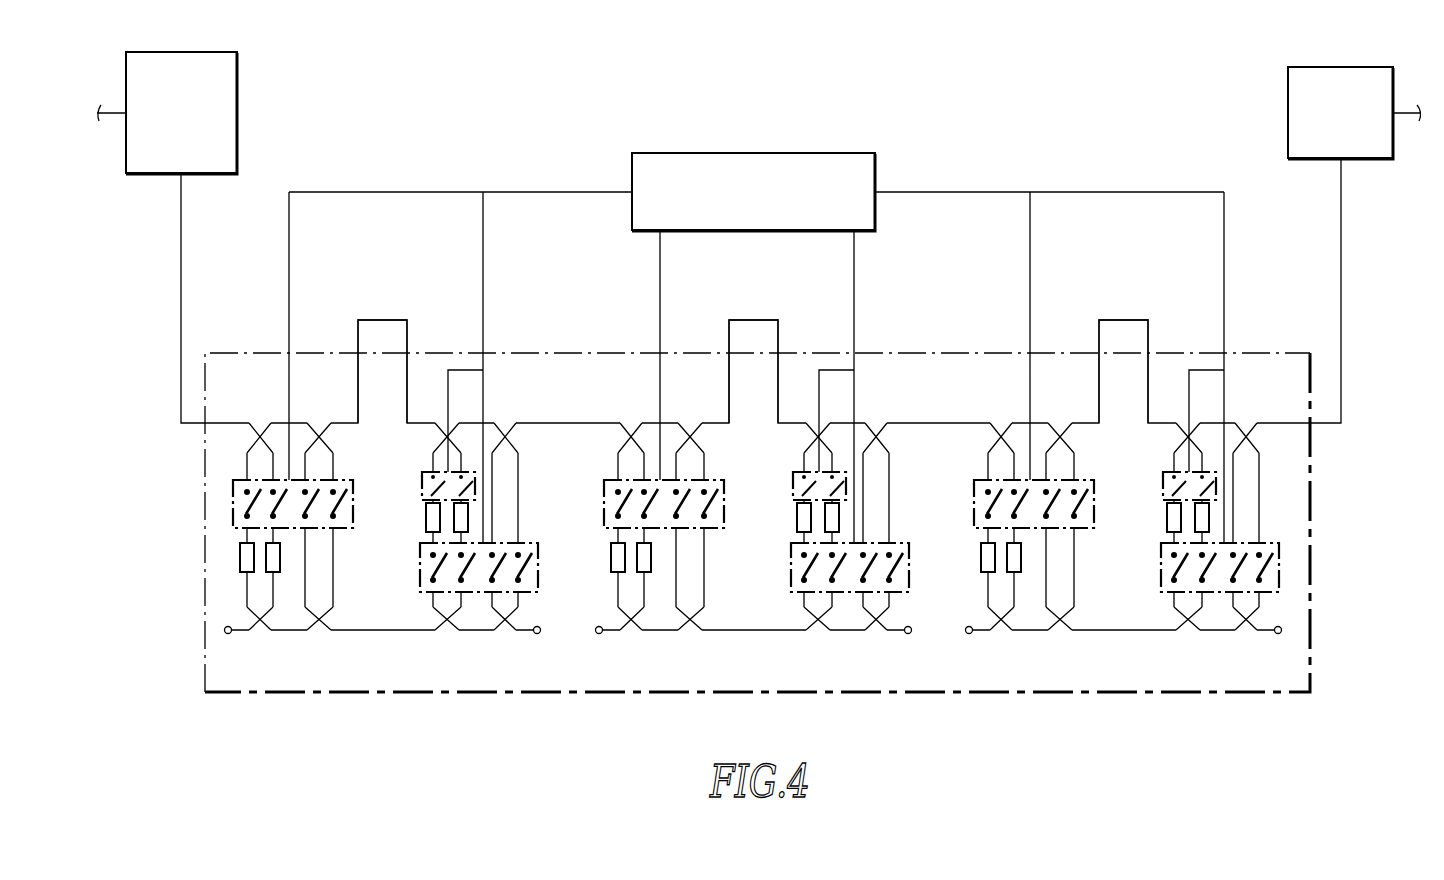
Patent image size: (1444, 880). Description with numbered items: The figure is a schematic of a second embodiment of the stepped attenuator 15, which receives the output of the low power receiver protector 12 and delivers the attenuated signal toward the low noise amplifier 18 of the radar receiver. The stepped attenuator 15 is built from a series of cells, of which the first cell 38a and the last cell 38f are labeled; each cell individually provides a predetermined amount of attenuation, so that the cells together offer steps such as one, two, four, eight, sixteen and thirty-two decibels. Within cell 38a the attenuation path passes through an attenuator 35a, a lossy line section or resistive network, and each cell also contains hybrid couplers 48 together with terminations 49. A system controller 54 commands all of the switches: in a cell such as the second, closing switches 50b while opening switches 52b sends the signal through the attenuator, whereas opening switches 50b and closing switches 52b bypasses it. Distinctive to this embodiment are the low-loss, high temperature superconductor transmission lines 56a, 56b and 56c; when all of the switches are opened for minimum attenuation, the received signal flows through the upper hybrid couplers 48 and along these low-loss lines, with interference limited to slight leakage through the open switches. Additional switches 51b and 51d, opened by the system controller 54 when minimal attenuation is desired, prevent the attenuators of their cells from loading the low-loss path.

The low power receiver protector 12 is at (171, 52).
The low noise amplifier 18 is at (1331, 67).
The system controller 54 is at (740, 153).
The low-loss high temperature superconductor transmission line 56a is at (389, 320).
The low-loss high temperature superconductor transmission line 56b is at (768, 353).
The low-loss high temperature superconductor transmission line 56c is at (1137, 353).
The switch 51b is at (466, 488).
The switch 51d is at (794, 486).
The switch 50b is at (468, 566).
The switch 52b is at (476, 567).
The attenuator 35a is at (273, 574).
The cell 38a is at (370, 435).
The cell 38f is at (1124, 438).
The termination 49 is at (538, 635).
The coupler 48 is at (1060, 646).
The stepped attenuator 15 is at (1313, 607).